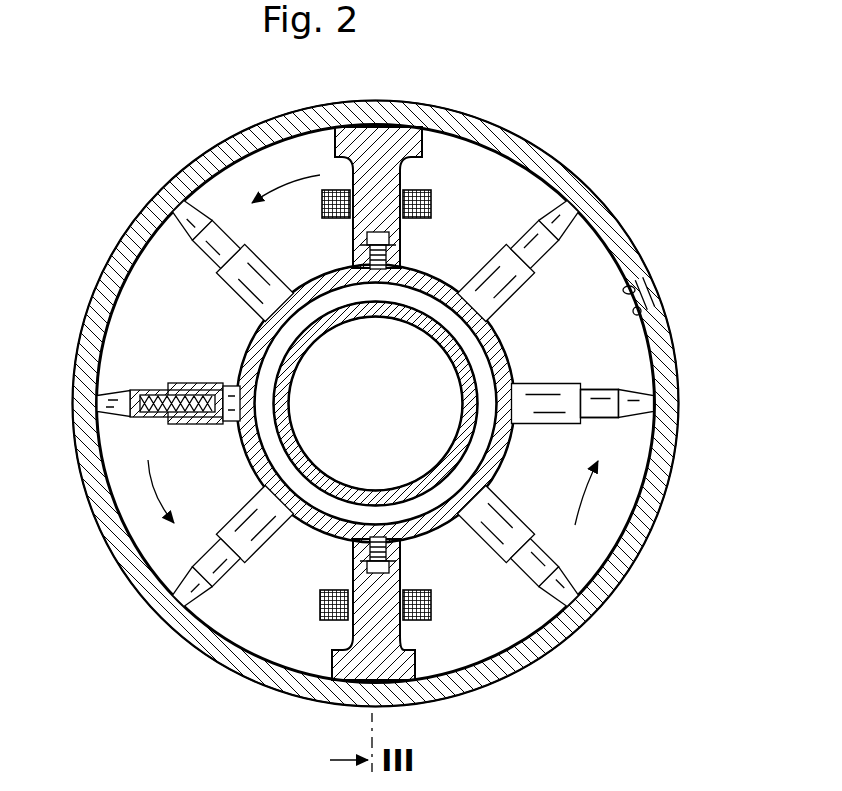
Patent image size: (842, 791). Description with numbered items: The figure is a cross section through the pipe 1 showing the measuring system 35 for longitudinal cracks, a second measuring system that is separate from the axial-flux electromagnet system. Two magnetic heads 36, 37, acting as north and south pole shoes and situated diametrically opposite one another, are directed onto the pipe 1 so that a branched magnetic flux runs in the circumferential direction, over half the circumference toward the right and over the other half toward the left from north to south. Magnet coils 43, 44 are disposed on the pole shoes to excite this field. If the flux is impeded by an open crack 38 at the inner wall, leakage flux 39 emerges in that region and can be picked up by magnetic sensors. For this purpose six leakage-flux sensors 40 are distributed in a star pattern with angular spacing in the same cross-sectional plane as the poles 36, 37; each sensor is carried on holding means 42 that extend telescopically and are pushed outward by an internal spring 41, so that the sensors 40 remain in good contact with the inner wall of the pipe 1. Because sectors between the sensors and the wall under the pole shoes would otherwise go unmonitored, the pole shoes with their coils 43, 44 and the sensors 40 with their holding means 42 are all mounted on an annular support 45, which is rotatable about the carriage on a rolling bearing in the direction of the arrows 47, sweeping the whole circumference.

The pipe 1 is at (560, 178).
The measuring system for longitudinal cracks 35 is at (274, 160).
The magnetic head 36 is at (410, 128).
The magnetic head 37 is at (300, 700).
The open crack 38 is at (604, 310).
The leakage flux 39 is at (637, 291).
The leakage-flux sensor 40 is at (657, 413).
The internal spring 41 is at (132, 415).
The holding means 42 is at (602, 400).
The magnet coil 43 is at (430, 628).
The magnet coil 44 is at (427, 192).
The annular support 45 is at (292, 505).
The arrows 47 is at (157, 490).